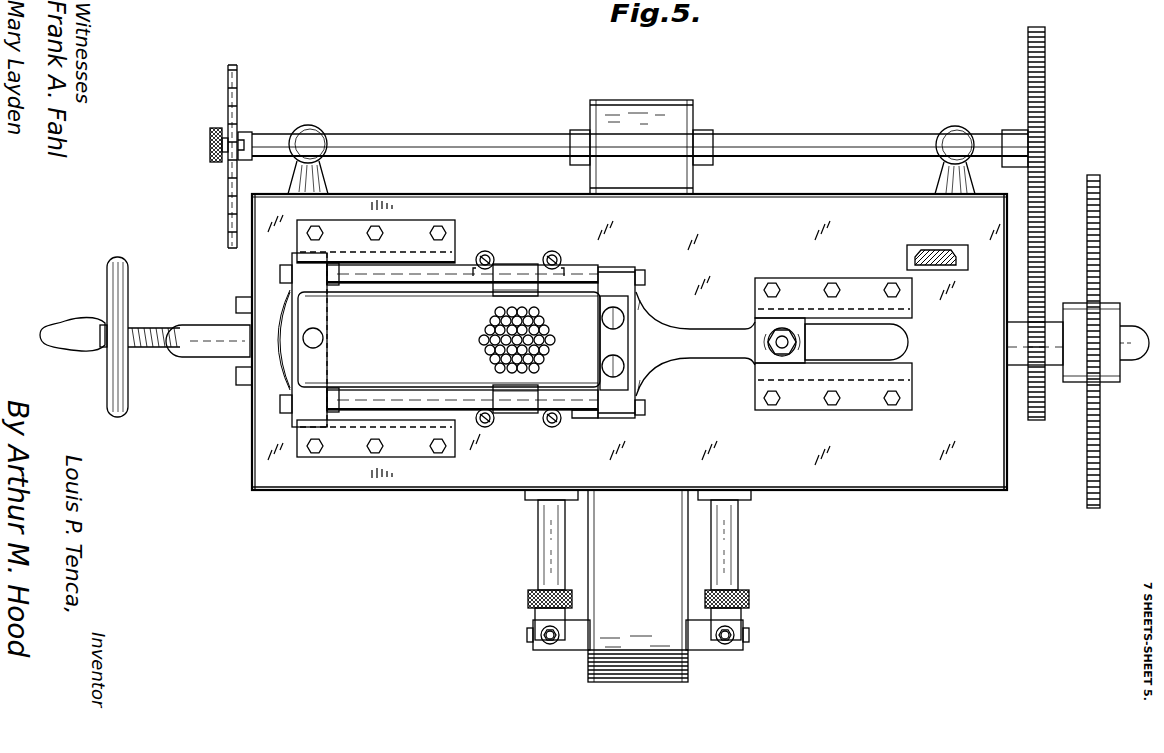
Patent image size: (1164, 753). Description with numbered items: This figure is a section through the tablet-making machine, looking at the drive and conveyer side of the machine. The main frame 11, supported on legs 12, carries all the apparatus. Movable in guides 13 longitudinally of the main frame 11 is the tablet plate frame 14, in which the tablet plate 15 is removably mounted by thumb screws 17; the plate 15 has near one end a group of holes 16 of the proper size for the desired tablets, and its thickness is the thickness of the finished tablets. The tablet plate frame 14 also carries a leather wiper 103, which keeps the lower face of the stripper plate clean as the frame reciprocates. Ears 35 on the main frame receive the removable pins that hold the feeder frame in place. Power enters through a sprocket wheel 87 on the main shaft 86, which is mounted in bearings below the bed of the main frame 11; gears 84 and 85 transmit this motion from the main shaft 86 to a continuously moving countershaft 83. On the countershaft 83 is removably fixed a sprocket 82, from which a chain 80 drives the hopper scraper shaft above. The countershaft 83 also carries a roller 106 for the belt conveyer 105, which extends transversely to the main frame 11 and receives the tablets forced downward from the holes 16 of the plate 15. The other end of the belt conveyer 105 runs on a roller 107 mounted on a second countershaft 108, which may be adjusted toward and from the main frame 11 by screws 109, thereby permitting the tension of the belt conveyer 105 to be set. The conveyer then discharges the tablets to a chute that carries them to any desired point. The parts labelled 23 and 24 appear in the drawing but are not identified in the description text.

The main frame 11 is at (425, 492).
The legs 12 is at (621, 342).
The guides 13 is at (912, 310).
The tablet plate frame 14 is at (695, 344).
The tablet plate 15 is at (449, 337).
The holes 16 is at (488, 352).
The thumb screws 17 is at (310, 345).
The threaded screw 23 is at (172, 348).
The handwheel 24 is at (122, 414).
The ears 35 is at (520, 268).
The chain 80 is at (228, 211).
The sprocket 82 is at (235, 68).
The countershaft 83 is at (445, 134).
The gear 84 is at (1032, 40).
The gear 85 is at (1040, 292).
The main shaft 86 is at (1128, 334).
The sprocket wheel 87 is at (1090, 506).
The leather wiper 103 is at (596, 405).
The belt conveyer 105 is at (638, 586).
The roller 106 is at (695, 118).
The roller 107 is at (690, 678).
The countershaft 108 is at (749, 637).
The screws 109 is at (528, 598).